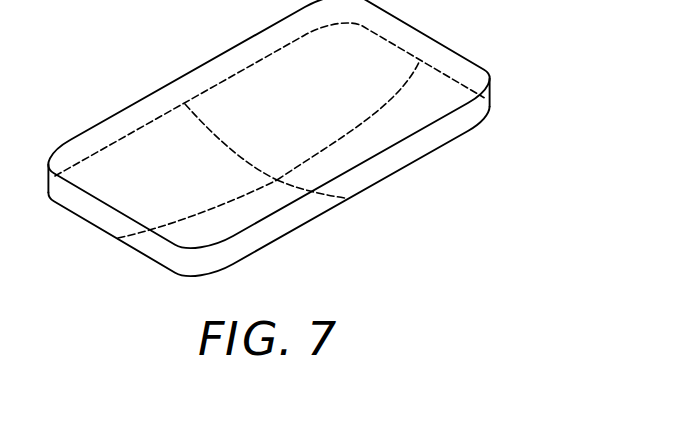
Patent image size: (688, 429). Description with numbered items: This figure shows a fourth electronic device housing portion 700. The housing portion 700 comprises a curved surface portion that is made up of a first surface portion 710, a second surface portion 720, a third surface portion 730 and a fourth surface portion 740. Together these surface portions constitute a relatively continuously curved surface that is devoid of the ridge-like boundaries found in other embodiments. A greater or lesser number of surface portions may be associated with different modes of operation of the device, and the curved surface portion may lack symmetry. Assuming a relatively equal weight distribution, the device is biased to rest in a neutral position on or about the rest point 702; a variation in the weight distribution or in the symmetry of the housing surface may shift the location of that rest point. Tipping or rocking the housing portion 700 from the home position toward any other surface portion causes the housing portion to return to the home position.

The housing portion 700 is at (444, 288).
The rest point 702 is at (277, 183).
The first surface portion 710 is at (170, 228).
The second surface portion 720 is at (323, 196).
The third surface portion 730 is at (400, 85).
The fourth surface portion 740 is at (218, 140).